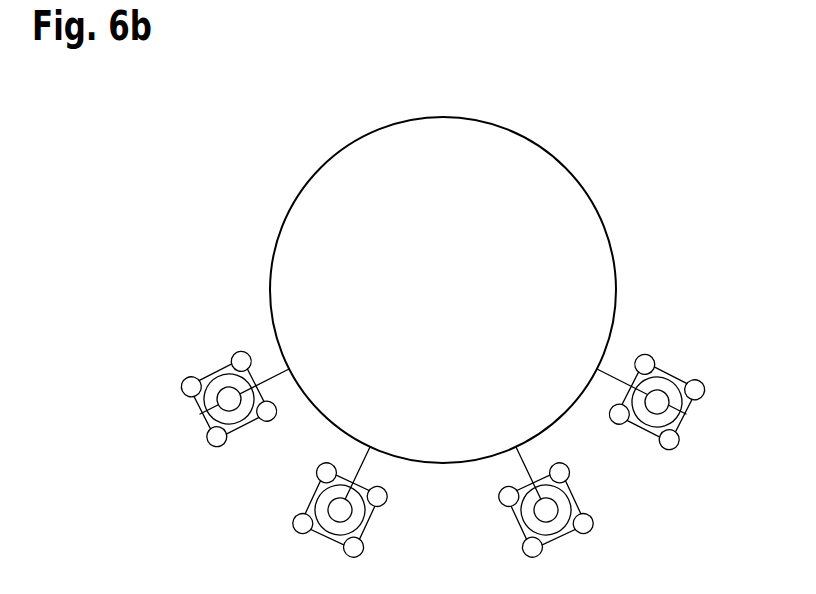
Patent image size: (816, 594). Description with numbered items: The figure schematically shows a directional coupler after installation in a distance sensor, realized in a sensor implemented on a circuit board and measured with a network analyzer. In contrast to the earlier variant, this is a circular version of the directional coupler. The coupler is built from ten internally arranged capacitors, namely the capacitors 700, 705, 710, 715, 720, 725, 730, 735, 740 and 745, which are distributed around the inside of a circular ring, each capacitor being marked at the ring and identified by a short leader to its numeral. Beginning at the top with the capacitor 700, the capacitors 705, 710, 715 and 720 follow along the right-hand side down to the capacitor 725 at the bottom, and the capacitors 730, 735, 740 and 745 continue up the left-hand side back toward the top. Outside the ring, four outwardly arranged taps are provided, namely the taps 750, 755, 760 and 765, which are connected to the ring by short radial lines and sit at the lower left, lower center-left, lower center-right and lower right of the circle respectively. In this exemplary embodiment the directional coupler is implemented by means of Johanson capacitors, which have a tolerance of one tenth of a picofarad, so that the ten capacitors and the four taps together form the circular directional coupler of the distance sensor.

The capacitor 700 is at (443, 128).
The capacitor 705 is at (539, 158).
The capacitor 710 is at (600, 239).
The capacitor 715 is at (600, 341).
The capacitor 720 is at (539, 422).
The capacitor 725 is at (443, 452).
The capacitor 730 is at (347, 422).
The capacitor 735 is at (286, 341).
The capacitor 740 is at (286, 239).
The capacitor 745 is at (347, 158).
The tap 750 is at (197, 411).
The tap 755 is at (298, 510).
The tap 760 is at (585, 500).
The tap 765 is at (690, 406).